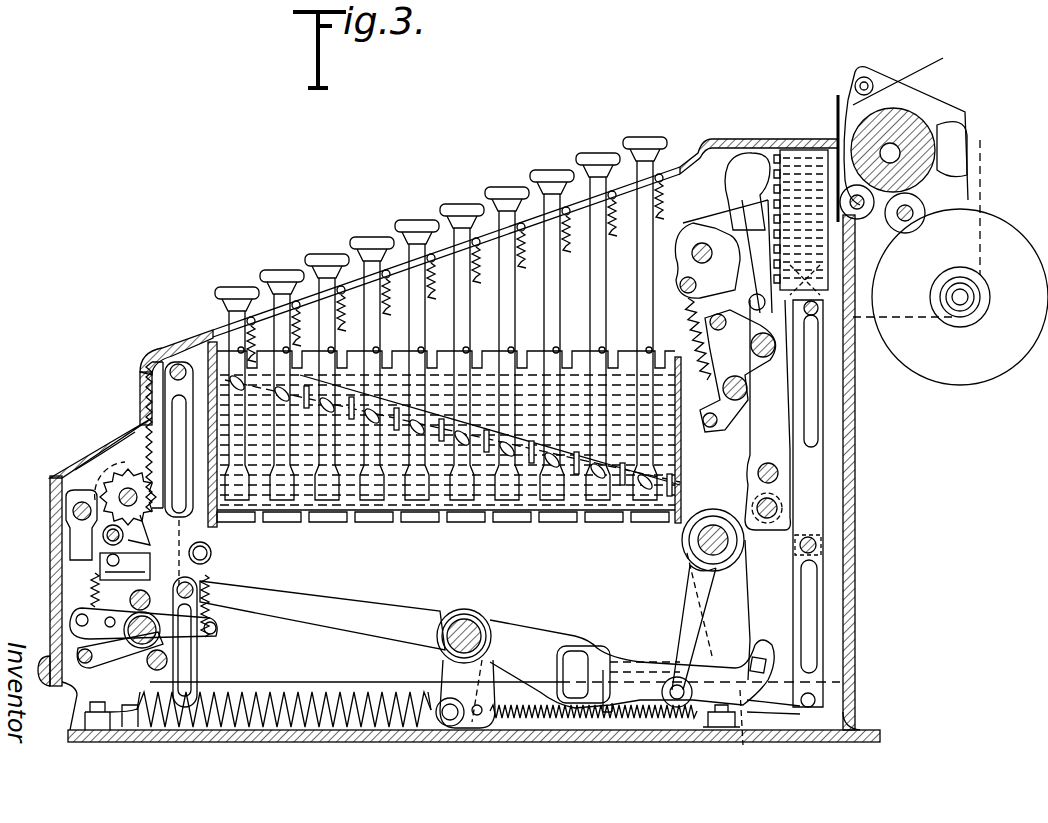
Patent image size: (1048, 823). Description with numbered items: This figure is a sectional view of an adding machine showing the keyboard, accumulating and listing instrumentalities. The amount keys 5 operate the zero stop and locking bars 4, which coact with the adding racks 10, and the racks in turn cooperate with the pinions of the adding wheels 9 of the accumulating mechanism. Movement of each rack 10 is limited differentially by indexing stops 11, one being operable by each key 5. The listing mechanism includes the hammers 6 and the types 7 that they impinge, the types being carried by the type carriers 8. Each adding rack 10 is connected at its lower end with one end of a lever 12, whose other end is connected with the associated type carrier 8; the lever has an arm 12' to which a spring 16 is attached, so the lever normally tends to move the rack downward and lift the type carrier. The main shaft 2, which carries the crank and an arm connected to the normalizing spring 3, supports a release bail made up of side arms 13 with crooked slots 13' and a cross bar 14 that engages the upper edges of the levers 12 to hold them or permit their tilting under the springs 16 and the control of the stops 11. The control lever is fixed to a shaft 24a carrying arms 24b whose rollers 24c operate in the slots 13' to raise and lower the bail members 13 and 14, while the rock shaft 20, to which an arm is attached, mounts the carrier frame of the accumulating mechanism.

The main shaft 2 is at (452, 633).
The normalizing spring 3 is at (245, 700).
The zero stop and locking bars 4 is at (556, 380).
The amount keys 5 is at (320, 255).
The hammers 6 is at (745, 165).
The types 7 is at (783, 175).
The type carriers 8 is at (805, 507).
The adding wheels 9 is at (125, 460).
The adding racks 10 is at (158, 378).
The indexing stops 11 is at (215, 447).
The lever 12 is at (322, 627).
The arm 12' is at (483, 694).
The side arms 13 is at (632, 653).
The crooked slots 13' is at (627, 717).
The cross bar 14 is at (758, 658).
The spring 16 is at (530, 722).
The rock shaft 20 is at (90, 606).
The shaft 24a is at (700, 545).
The arms 24b is at (700, 648).
The rollers 24c is at (742, 702).